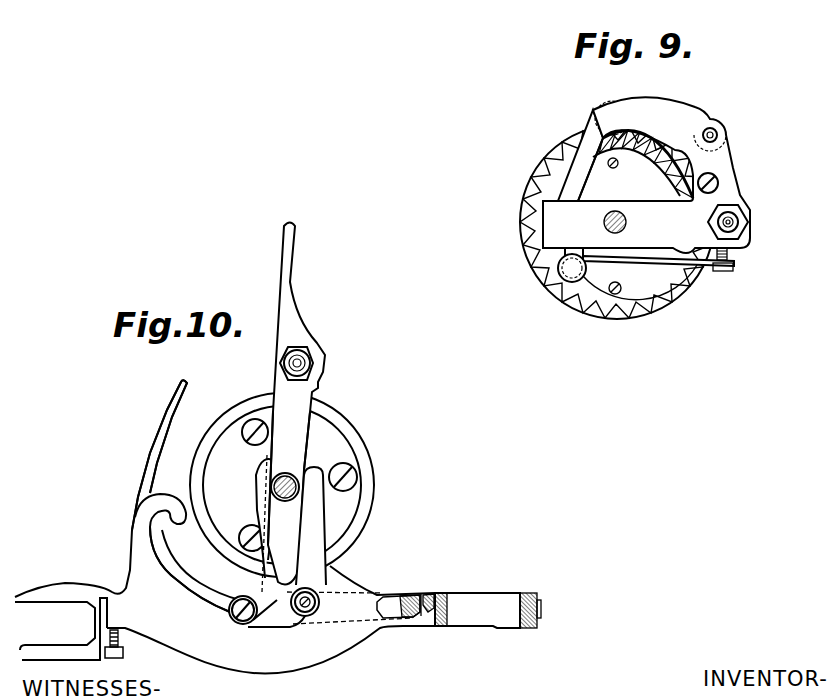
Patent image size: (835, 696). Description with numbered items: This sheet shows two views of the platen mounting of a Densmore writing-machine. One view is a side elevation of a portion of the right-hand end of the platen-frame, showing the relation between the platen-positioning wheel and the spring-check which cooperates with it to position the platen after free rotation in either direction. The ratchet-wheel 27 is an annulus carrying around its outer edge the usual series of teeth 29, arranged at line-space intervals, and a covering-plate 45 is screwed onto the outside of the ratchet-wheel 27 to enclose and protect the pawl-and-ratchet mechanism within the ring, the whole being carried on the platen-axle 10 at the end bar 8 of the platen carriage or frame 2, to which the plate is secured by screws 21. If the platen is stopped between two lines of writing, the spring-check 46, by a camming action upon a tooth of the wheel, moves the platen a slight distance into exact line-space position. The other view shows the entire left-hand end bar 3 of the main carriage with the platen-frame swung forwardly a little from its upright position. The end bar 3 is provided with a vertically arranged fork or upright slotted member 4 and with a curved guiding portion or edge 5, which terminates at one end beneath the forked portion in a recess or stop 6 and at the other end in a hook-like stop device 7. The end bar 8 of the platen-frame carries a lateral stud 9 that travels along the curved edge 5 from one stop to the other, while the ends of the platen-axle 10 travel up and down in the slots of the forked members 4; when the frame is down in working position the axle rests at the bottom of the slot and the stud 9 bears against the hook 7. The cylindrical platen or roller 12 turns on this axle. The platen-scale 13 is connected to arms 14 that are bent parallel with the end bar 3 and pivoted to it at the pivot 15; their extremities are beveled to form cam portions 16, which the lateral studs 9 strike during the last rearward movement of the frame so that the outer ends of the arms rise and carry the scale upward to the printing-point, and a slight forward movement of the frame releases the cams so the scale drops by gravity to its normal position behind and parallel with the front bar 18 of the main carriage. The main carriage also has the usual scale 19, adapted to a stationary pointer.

In FIG. 9, the platen carriage or frame 2 is at (647, 184).
In FIG. 10, the platen carriage or frame 2 is at (296, 404).
In FIG. 10, the end bar of the main carriage 3 is at (260, 667).
In FIG. 10, the fork or upright slotted member 4 is at (318, 517).
In FIG. 10, the curved guiding portion or edge 5 is at (192, 595).
In FIG. 10, the recess or stop 6 is at (297, 621).
In FIG. 10, the hook-like stop device 7 is at (159, 455).
In FIG. 9, the end bar of the platen-frame 8 is at (616, 224).
In FIG. 10, the end bar of the platen-frame 8 is at (289, 471).
In FIG. 9, the lateral stud 9 is at (709, 193).
In FIG. 10, the lateral stud 9 is at (243, 601).
In FIG. 9, the platen-axle 10 is at (626, 219).
In FIG. 10, the platen-axle 10 is at (286, 476).
In FIG. 9, the cylindrical platen or roller 12 is at (527, 237).
In FIG. 10, the cylindrical platen or roller 12 is at (370, 471).
In FIG. 10, the platen-scale 13 is at (422, 593).
In FIG. 10, the arms 14 is at (398, 602).
In FIG. 10, the pivot 15 is at (316, 608).
In FIG. 10, the cam portions 16 is at (262, 597).
In FIG. 10, the front bar of the main carriage 18 is at (427, 594).
In FIG. 10, the scale 19 is at (534, 598).
In FIG. 10, the screws 21 is at (298, 485).
In FIG. 9, the ratchet-wheel 27 is at (622, 306).
In FIG. 9, the teeth 29 is at (663, 302).
In FIG. 9, the covering-plate 45 is at (618, 172).
In FIG. 9, the spring-check 46 is at (606, 113).